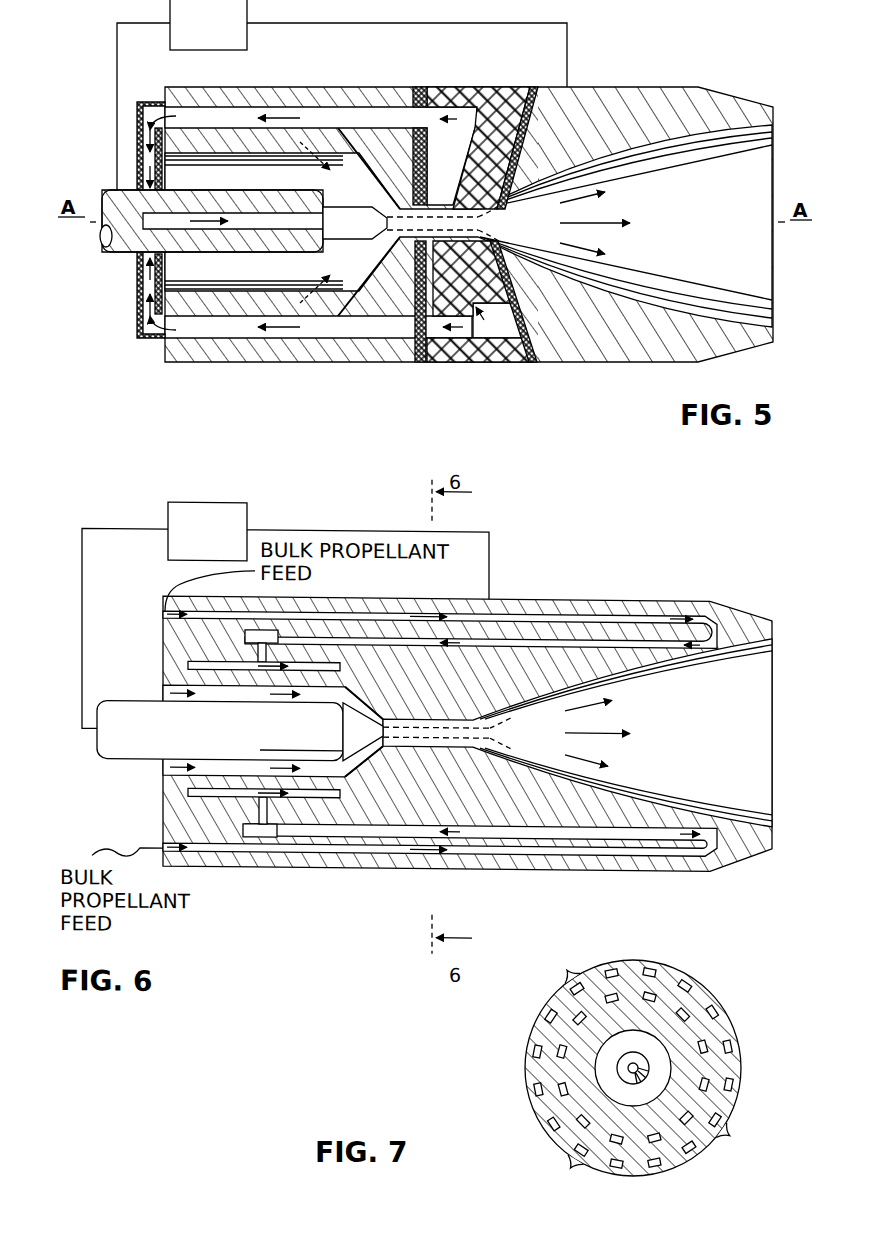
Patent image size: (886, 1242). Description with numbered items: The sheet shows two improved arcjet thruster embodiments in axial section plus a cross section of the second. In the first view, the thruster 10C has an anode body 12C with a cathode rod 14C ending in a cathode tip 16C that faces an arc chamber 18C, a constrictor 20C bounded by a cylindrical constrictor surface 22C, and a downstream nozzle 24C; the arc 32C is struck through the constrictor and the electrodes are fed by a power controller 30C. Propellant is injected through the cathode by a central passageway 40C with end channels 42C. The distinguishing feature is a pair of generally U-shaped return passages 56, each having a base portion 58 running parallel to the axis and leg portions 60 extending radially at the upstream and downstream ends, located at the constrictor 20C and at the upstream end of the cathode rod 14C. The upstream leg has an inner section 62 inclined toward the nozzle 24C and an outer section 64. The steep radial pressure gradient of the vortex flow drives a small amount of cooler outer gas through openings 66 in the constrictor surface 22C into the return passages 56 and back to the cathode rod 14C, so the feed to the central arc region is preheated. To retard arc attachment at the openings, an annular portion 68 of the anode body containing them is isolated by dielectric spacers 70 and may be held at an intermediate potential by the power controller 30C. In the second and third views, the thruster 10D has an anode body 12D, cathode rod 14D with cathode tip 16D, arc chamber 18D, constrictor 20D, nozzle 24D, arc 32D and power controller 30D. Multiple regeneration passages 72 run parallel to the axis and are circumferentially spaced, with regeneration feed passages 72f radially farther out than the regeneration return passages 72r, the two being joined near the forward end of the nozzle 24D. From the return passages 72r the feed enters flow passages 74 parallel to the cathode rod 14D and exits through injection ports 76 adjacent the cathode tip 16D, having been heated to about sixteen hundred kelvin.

In FIG. 5, the arcjet thruster 10C is at (735, 50).
In FIG. 5, the anode body 12C is at (598, 84).
In FIG. 5, the cathode rod 14C is at (227, 256).
In FIG. 5, the cathode tip 16C is at (384, 270).
In FIG. 5, the anode electrode 18C is at (378, 192).
In FIG. 5, the constrictor 20C is at (438, 362).
In FIG. 5, the constrictor surface 22C is at (404, 243).
In FIG. 5, the nozzle 24C is at (660, 360).
In FIG. 5, the power controller 30C is at (232, 52).
In FIG. 5, the arc 32C is at (498, 228).
In FIG. 5, the central passageway 40C is at (165, 173).
In FIG. 5, the end channels 42C is at (325, 198).
In FIG. 5, the return passages 56 is at (318, 104).
In FIG. 5, the base portion 58 is at (357, 122).
In FIG. 5, the leg portions 60 is at (137, 152).
In FIG. 5, the inner section 62 is at (518, 165).
In FIG. 5, the outer section 64 is at (472, 242).
In FIG. 5, the openings 66 is at (500, 210).
In FIG. 5, the annular portion 68 is at (500, 362).
In FIG. 5, the dielectric spacers 70 is at (410, 362).
In FIG. 6, the arcjet thruster 10D is at (658, 551).
In FIG. 7, the arcjet thruster 10D is at (732, 1006).
In FIG. 6, the anode body 12D is at (515, 594).
In FIG. 7, the anode body 12D is at (523, 1062).
In FIG. 6, the cathode rod 14D is at (206, 760).
In FIG. 7, the cathode rod 14D is at (638, 1050).
In FIG. 6, the cathode tip 16D is at (372, 720).
In FIG. 7, the cathode tip 16D is at (649, 1059).
In FIG. 6, the arc chamber 18D is at (374, 757).
In FIG. 6, the constrictor 20D is at (452, 762).
In FIG. 6, the nozzle 24D is at (728, 835).
In FIG. 7, the nozzle 24D is at (538, 1040).
In FIG. 6, the power controller 30D is at (170, 550).
In FIG. 6, the arc 32D is at (493, 739).
In FIG. 6, the regeneration passages 72 is at (322, 601).
In FIG. 6, the regeneration return passages 72r is at (342, 638).
In FIG. 7, the regeneration return passages 72r is at (690, 1011).
In FIG. 6, the regeneration feed passages 72f is at (458, 595).
In FIG. 7, the regeneration feed passages 72f is at (568, 970).
In FIG. 6, the flow passages 74 is at (188, 664).
In FIG. 6, the injection ports 76 is at (356, 667).